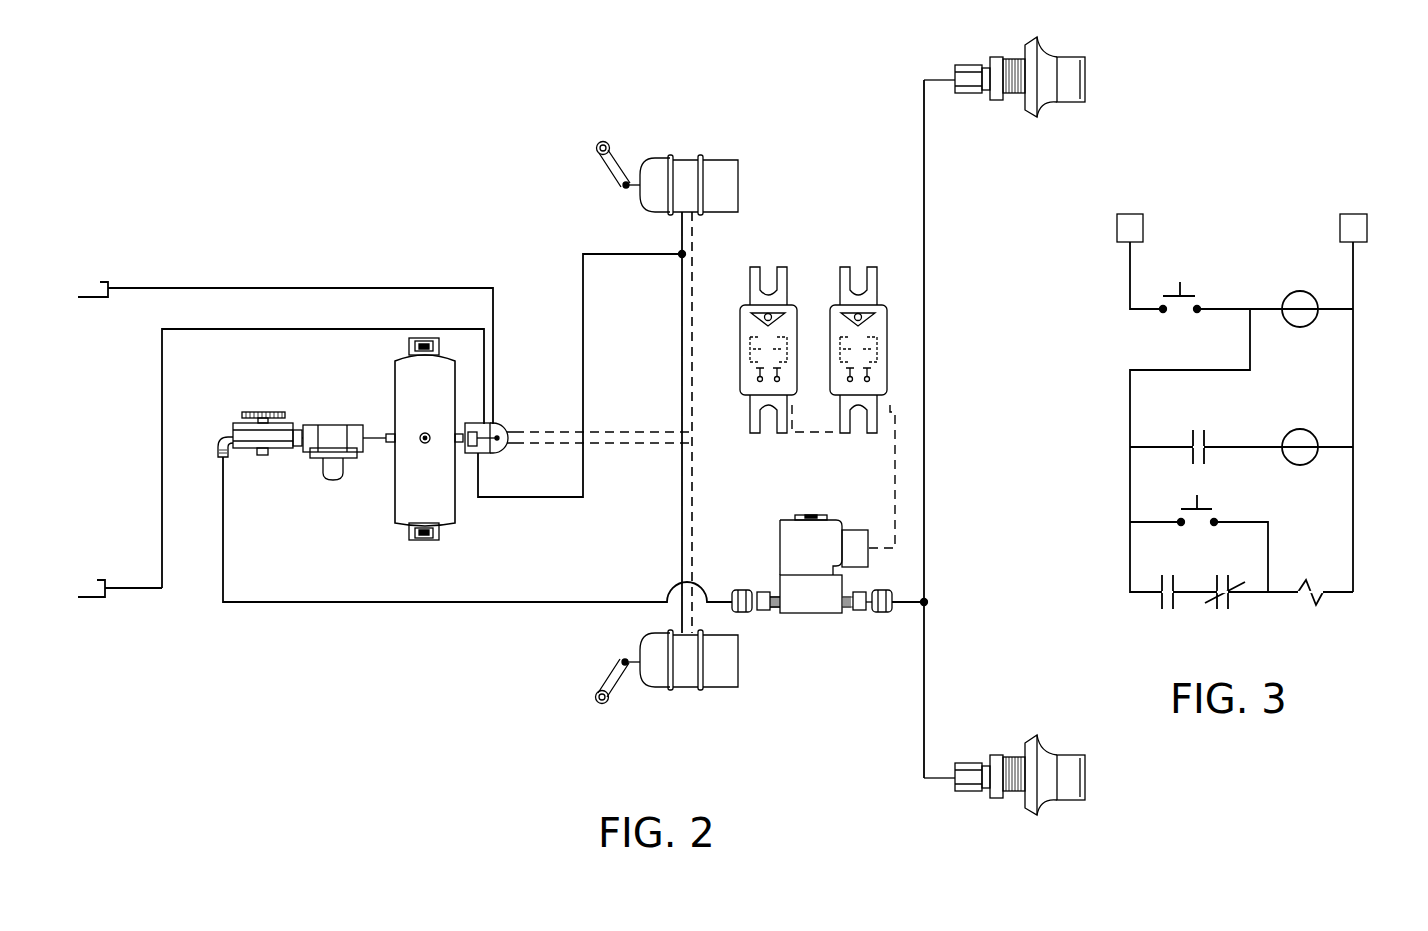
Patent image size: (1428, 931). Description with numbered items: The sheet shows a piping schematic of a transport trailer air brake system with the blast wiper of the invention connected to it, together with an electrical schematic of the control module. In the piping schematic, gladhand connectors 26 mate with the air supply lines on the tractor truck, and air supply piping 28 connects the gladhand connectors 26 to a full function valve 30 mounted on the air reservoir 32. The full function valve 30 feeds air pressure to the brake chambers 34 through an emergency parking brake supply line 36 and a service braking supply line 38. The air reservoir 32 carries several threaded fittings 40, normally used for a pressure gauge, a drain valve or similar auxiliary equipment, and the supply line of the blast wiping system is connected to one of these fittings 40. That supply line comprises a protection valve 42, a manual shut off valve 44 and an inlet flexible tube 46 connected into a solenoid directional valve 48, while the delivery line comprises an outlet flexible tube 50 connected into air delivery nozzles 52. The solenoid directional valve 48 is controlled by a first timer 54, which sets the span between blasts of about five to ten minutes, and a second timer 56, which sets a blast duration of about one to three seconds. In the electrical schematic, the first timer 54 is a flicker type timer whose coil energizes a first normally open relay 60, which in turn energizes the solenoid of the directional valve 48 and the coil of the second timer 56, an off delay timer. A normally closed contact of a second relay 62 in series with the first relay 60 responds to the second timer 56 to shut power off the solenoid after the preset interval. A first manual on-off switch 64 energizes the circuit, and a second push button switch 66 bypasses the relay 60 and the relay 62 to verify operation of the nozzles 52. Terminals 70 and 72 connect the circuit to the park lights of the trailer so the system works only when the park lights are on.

In FIG. 2, the gladhand connectors 26 is at (112, 286).
In FIG. 2, the air supply piping 28 is at (283, 288).
In FIG. 2, the full function valve 30 is at (493, 425).
In FIG. 2, the air reservoir 32 is at (457, 505).
In FIG. 2, the brake chambers 34 is at (672, 157).
In FIG. 2, the emergency parking brake supply line 36 is at (643, 432).
In FIG. 2, the service braking supply line 38 is at (583, 258).
In FIG. 2, the threaded fittings 40 is at (425, 443).
In FIG. 2, the protection valve 42 is at (337, 425).
In FIG. 2, the manual shut off valve 44 is at (263, 412).
In FIG. 2, the inlet flexible tube 46 is at (383, 603).
In FIG. 2, the solenoid directional valve 48 is at (812, 613).
In FIG. 3, the solenoid directional valve 48 is at (1320, 598).
In FIG. 2, the outlet flexible tube 50 is at (926, 630).
In FIG. 2, the air delivery nozzles 52 is at (1032, 117).
In FIG. 2, the first timer 54 is at (800, 268).
In FIG. 3, the first timer 54 is at (1310, 327).
In FIG. 2, the second timer 56 is at (893, 268).
In FIG. 3, the second timer 56 is at (1310, 460).
In FIG. 3, the first normally open relay 60 is at (1170, 438).
In FIG. 3, the second relay 62 is at (1235, 600).
In FIG. 3, the first manual on-off switch 64 is at (1200, 298).
In FIG. 3, the second push button switch 66 is at (1175, 515).
In FIG. 3, the terminal 70 is at (1130, 214).
In FIG. 3, the terminal 72 is at (1353, 214).